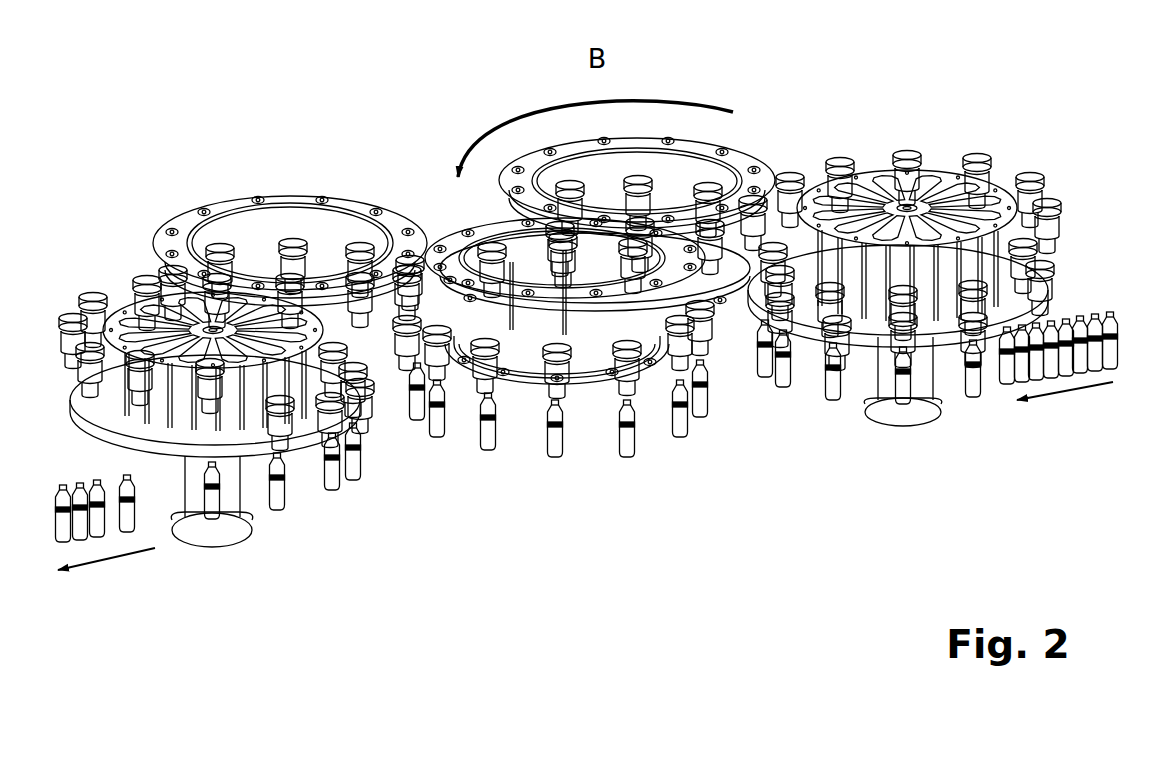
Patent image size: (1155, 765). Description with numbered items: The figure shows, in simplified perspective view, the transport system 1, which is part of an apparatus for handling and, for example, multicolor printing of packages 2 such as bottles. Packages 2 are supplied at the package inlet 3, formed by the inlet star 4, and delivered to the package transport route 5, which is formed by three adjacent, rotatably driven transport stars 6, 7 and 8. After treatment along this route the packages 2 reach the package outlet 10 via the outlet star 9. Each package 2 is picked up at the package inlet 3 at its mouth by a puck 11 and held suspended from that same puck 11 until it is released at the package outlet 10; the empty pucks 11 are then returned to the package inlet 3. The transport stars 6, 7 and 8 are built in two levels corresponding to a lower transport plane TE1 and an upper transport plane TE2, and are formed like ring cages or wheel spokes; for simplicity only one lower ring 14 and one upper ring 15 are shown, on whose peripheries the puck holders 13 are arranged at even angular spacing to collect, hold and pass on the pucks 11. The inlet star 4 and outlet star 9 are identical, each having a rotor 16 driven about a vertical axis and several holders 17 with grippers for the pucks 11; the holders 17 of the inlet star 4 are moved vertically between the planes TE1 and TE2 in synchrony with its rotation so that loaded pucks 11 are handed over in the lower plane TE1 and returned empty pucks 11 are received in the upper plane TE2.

The transport system 1 is at (917, 88).
The package 2 is at (278, 487).
The package inlet 3 is at (967, 425).
The inlet star 4 is at (877, 143).
The package transport route 5 is at (577, 553).
The transport star 6 is at (748, 133).
The transport star 7 is at (708, 443).
The transport star 8 is at (228, 162).
The outlet star 9 is at (131, 263).
The package outlet 10 is at (260, 563).
The puck 11 is at (357, 252).
The puck holder 13 is at (412, 214).
The lower ring 14 is at (653, 383).
The upper ring 15 is at (318, 196).
The rotor 16 is at (132, 313).
The holder 17 is at (307, 418).
The lower transport plane TE1 is at (1062, 295).
The upper transport plane TE2 is at (1062, 181).